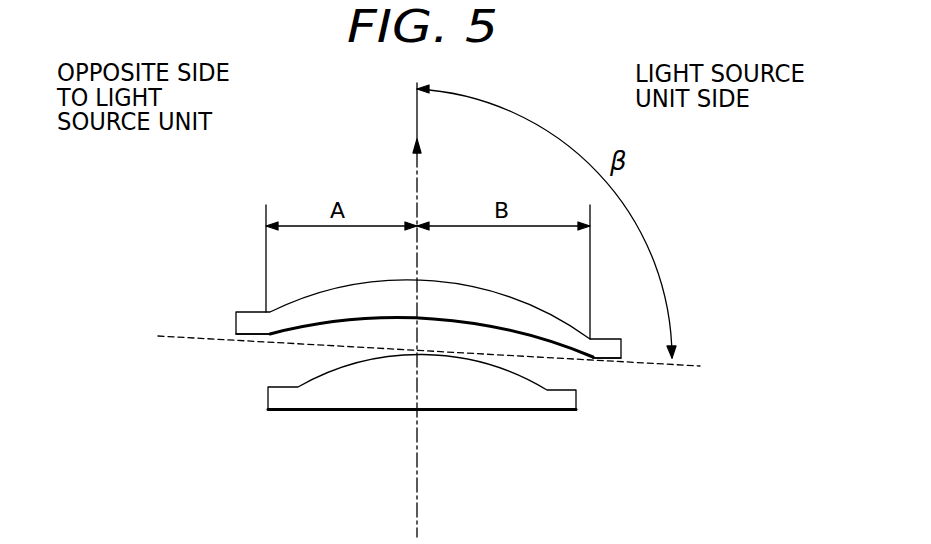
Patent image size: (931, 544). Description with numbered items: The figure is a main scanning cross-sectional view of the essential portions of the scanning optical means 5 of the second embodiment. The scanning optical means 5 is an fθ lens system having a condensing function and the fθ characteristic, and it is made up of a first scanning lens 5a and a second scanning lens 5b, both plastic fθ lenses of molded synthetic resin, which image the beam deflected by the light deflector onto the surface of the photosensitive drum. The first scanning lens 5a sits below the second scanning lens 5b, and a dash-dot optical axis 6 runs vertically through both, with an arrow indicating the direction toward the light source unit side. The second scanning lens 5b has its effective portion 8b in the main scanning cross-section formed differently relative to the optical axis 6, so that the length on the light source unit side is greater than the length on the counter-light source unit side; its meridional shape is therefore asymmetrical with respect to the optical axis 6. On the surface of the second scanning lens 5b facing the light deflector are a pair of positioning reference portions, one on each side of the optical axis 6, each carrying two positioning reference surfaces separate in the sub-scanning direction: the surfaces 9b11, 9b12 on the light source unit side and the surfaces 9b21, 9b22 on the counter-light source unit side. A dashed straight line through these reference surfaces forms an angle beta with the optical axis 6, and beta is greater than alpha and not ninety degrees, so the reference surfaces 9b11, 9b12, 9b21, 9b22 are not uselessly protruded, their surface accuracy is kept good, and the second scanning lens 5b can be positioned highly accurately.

The scanning optical means 5 is at (145, 478).
The first scanning lens 5a is at (343, 412).
The second scanning lens 5b is at (433, 349).
The effective portion 8b is at (520, 330).
The positioning reference surface 9b21 is at (234, 398).
The positioning reference surface 9b22 is at (245, 337).
The positioning reference surface 9b11 is at (632, 409).
The positioning reference surface 9b12 is at (607, 362).
The optical axis 6 is at (418, 493).